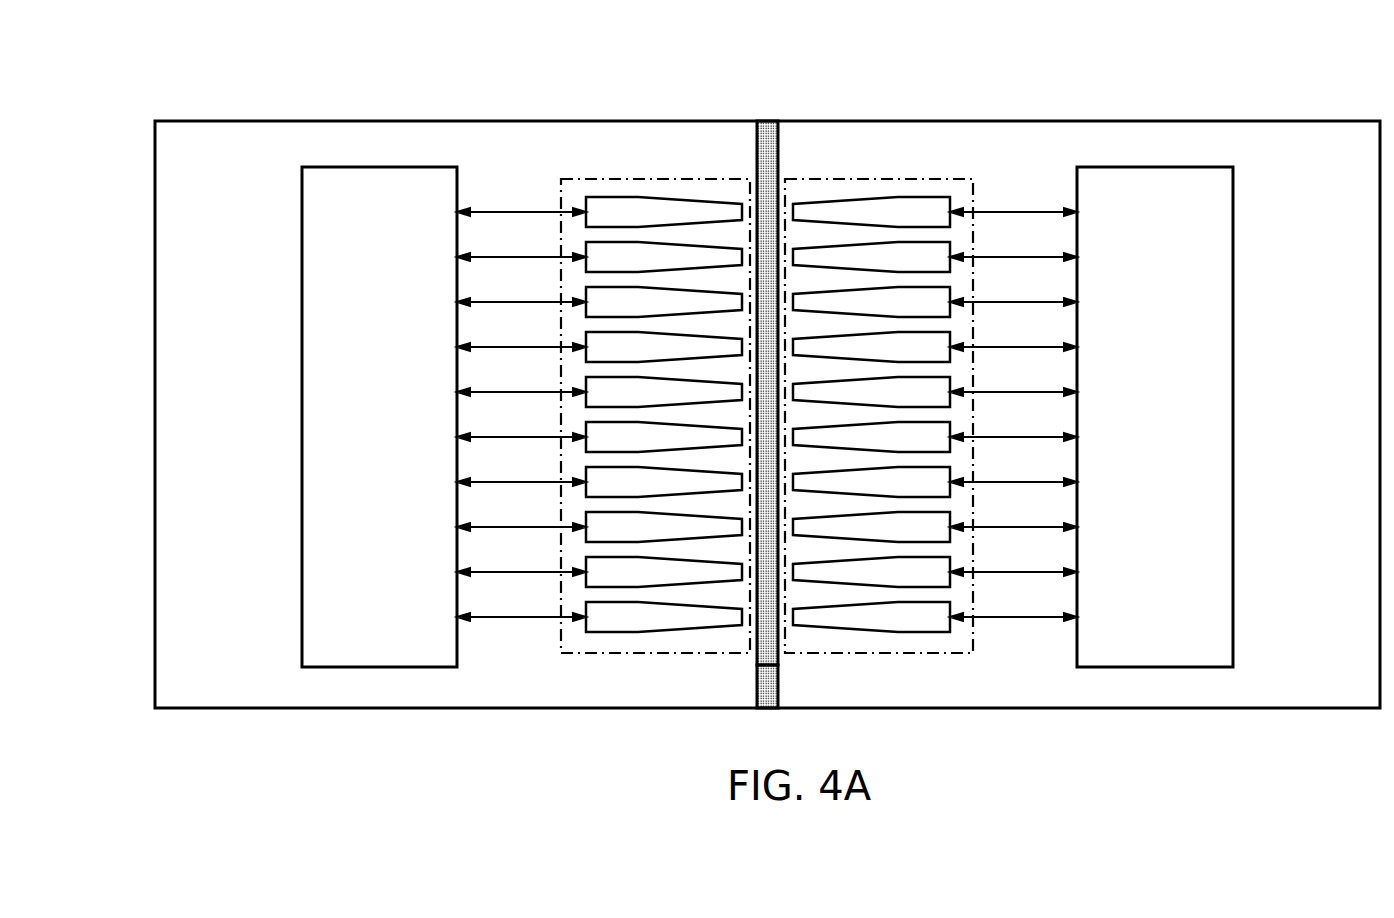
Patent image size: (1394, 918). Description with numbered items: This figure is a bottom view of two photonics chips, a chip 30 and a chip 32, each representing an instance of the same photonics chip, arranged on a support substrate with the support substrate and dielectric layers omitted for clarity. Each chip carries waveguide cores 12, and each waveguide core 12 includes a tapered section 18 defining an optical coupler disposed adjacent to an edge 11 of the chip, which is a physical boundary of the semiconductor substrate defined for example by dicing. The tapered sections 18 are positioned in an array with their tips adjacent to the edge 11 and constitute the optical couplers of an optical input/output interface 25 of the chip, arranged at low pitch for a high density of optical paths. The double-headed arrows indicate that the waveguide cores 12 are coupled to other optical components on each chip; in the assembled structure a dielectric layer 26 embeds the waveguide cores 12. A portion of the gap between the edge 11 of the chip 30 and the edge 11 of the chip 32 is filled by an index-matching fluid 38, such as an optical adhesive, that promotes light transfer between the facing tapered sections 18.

The edge 11 is at (757, 163).
The waveguide core 12 is at (612, 213).
The tapered section 18 is at (628, 75).
The optical input/output interface 25 is at (578, 206).
The dielectric layer 26 is at (320, 434).
The chip 30 is at (262, 98).
The chip 32 is at (1265, 91).
The index-matching fluid 38 is at (768, 688).